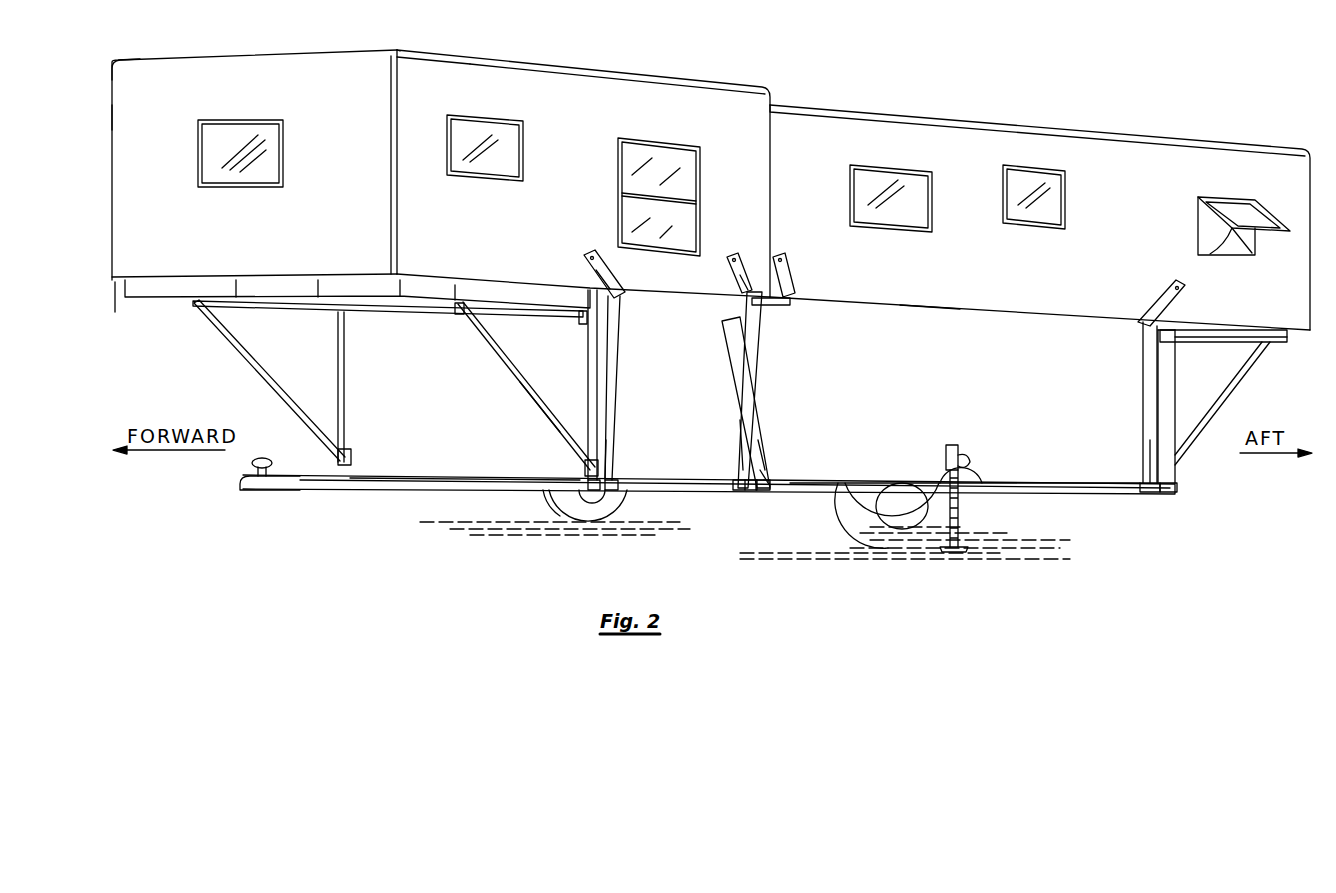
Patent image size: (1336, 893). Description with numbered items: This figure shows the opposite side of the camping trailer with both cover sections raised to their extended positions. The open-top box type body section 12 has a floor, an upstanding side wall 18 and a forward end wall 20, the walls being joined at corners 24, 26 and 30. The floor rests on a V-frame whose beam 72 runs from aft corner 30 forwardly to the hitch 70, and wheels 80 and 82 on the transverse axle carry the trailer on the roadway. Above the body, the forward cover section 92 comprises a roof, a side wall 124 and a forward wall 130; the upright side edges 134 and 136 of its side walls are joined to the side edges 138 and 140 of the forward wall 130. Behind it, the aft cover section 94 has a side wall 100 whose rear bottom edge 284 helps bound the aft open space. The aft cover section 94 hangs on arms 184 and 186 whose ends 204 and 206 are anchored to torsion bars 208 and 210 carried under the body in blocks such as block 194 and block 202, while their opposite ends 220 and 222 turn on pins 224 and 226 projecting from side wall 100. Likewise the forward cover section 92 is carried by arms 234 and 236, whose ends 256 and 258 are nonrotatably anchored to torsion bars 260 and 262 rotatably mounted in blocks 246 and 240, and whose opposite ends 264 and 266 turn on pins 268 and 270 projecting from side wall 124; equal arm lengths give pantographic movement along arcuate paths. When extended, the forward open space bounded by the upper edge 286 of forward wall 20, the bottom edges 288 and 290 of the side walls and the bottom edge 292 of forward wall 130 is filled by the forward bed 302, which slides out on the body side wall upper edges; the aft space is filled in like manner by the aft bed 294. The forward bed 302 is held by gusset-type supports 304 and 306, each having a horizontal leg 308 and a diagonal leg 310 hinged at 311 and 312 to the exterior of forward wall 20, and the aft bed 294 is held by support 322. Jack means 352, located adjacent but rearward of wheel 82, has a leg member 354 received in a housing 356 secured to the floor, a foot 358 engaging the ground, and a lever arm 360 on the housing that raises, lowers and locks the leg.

The body section 12 is at (1091, 505).
The side wall 18 is at (998, 369).
The end wall 20 is at (458, 404).
The corner 24 is at (343, 379).
The corner 26 is at (596, 386).
The corner 30 is at (1166, 382).
The hitch 70 is at (243, 487).
The beam 72 is at (392, 490).
The wheel 80 is at (548, 500).
The wheel 82 is at (846, 534).
The forward cover section 92 is at (696, 72).
The aft cover section 94 is at (986, 110).
The side wall 100 is at (992, 277).
The side wall 124 is at (580, 168).
The forward wall 130 is at (272, 221).
The upright side edge 134 is at (112, 103).
The upright side edge 136 is at (400, 70).
The side edge 138 is at (118, 113).
The side edge 140 is at (388, 91).
The arm 184 is at (727, 344).
The arm 186 is at (1141, 393).
The block 194 is at (1177, 492).
The block 202 is at (771, 490).
The end of arm 204 is at (765, 468).
The end of arm 206 is at (1152, 466).
The torsion bar 208 is at (768, 478).
The torsion bar 210 is at (1167, 483).
The end of arm 220 is at (788, 263).
The end of arm 222 is at (1163, 300).
The pin 224 is at (784, 255).
The pin 226 is at (1186, 291).
The arm 234 is at (615, 323).
The arm 236 is at (760, 352).
The block 240 is at (736, 490).
The block 246 is at (614, 487).
The end of arm 256 is at (606, 468).
The end of arm 258 is at (742, 465).
The torsion bar 260 is at (611, 489).
The torsion bar 262 is at (745, 489).
The end of arm 264 is at (594, 268).
The end of arm 266 is at (736, 271).
The pin 268 is at (590, 258).
The pin 270 is at (733, 256).
The bottom edge 284 is at (946, 310).
The upper edge 286 is at (412, 309).
The bottom edge 288 is at (458, 283).
The bottom edge 290 is at (125, 312).
The bottom edge 292 is at (246, 283).
The aft bed 294 is at (1276, 342).
The forward bed 302 is at (322, 287).
The gusset-type support 304 is at (252, 389).
The gusset-type support 306 is at (538, 428).
The horizontal leg 308 is at (494, 322).
The diagonal leg 310 is at (499, 348).
The hinge mounting 311 is at (583, 333).
The hinge mounting 312 is at (586, 457).
The support 322 is at (1234, 402).
The jack means 352 is at (975, 503).
The leg member 354 is at (959, 447).
The housing 356 is at (947, 458).
The foot 358 is at (956, 549).
The lever arm 360 is at (972, 465).